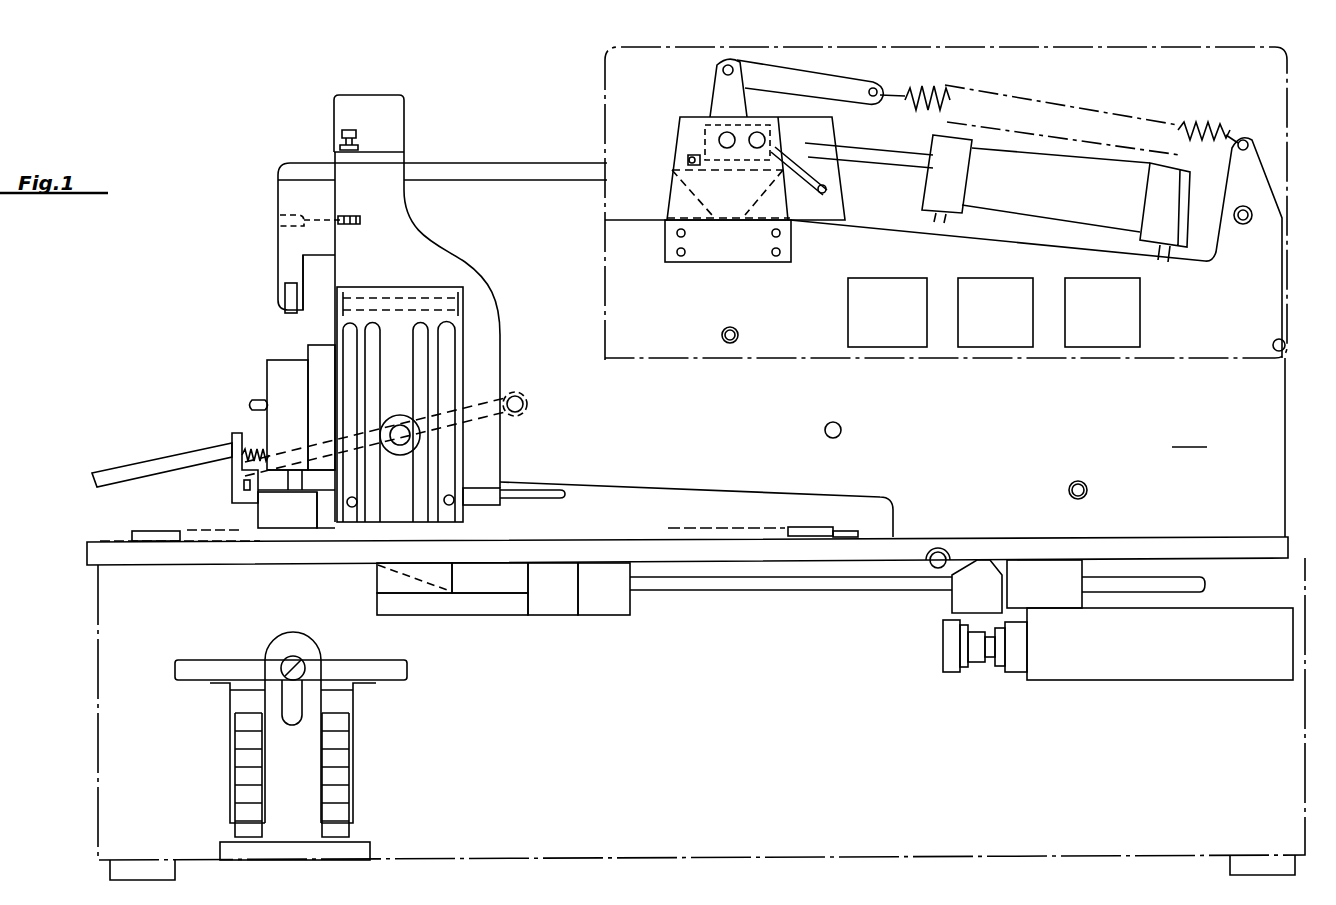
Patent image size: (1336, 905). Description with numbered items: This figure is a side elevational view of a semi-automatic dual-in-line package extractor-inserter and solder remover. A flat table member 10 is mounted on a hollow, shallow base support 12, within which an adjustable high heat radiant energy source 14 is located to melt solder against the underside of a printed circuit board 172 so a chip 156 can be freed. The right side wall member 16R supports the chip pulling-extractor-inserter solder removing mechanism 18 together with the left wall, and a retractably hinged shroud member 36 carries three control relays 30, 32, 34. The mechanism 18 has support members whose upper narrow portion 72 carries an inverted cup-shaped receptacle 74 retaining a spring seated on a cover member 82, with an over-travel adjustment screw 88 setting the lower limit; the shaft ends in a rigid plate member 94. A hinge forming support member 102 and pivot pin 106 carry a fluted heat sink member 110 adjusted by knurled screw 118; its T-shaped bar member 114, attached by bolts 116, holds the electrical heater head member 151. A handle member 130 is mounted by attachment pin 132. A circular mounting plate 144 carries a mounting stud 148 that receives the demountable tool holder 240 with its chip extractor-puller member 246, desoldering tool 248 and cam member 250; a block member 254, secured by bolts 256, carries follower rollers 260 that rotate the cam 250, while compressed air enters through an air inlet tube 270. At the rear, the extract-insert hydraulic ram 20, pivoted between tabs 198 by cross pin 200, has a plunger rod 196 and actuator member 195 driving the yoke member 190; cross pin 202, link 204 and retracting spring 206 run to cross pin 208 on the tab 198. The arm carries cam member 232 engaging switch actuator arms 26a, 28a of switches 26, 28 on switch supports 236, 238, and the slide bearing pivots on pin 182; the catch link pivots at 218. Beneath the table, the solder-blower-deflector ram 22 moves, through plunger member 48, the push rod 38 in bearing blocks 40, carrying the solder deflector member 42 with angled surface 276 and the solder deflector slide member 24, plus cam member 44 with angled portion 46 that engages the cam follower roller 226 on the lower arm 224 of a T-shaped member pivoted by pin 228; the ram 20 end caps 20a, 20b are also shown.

The table member 10 is at (1222, 545).
The base support 12 is at (97, 738).
The high heat radiant energy source 14 is at (350, 772).
The right side wall member 16R is at (1191, 437).
The chip pulling-extractor-inserter solder removing mechanism 18 is at (465, 252).
The extract-insert hydraulic ram 20 is at (1065, 160).
The cylinder rear end cap 20a is at (948, 216).
The cylinder front end cap 20b is at (1170, 245).
The solder-blower-deflector hydraulic ram 22 is at (1095, 670).
The solder deflector slide member 24 is at (487, 620).
The cam actuated switch 26 is at (706, 118).
The switch actuator arm 26a is at (688, 160).
The cam actuated switch 28 is at (838, 150).
The switch actuator arm 28a is at (830, 193).
The control relay 30 is at (887, 348).
The control relay 32 is at (995, 348).
The control relay 34 is at (1100, 348).
The hinged shroud member 36 is at (1136, 42).
The push rod 38 is at (790, 592).
The bearing block 40 is at (625, 610).
The solder deflector member 42 is at (378, 608).
The cam member 44 is at (958, 600).
The angled portion of cam 46 is at (962, 570).
The plunger member 48 is at (955, 672).
The upper narrow portion of support members 72 is at (420, 230).
The inverted cup-shaped receptacle 74 is at (373, 100).
The cover member 82 is at (500, 168).
The over-travel adjustment screw 88 is at (342, 134).
The rigid plate member 94 is at (480, 497).
The hinge forming support member 102 is at (456, 290).
The pivot pin 106 is at (470, 300).
The fluted heat sink member 110 is at (463, 350).
The T-shaped bar member 114 is at (330, 545).
The bolt 116 is at (455, 505).
The knurled adjustment screw 118 is at (421, 437).
The handle member 130 is at (97, 470).
The attachment pin 132 is at (524, 402).
The circular mounting plate 144 is at (325, 348).
The mounting stud 148 is at (250, 405).
The electrical heater head member 151 is at (266, 545).
The chip 156 is at (812, 527).
The printed circuit board 172 is at (605, 535).
The pin 182 is at (728, 344).
The yoke member 190 is at (718, 96).
The actuator member 195 is at (826, 143).
The plunger rod 196 is at (888, 166).
The rear projecting tab 198 is at (1228, 262).
The cross pin 200 is at (1248, 225).
The cross pin 202 is at (733, 60).
The link 204 is at (808, 78).
The retracting spring 206 is at (942, 90).
The cross pin 208 is at (1245, 135).
The pivot 218 is at (841, 435).
The lower dependent arm 224 is at (938, 552).
The cam follower roller 226 is at (925, 572).
The pin 228 is at (1088, 490).
The cam member 232 is at (670, 190).
The switch support 236 is at (703, 265).
The switch support 238 is at (817, 228).
The demountable tool holder 240 is at (254, 386).
The chip extractor-puller member 246 is at (225, 496).
The desoldering tool 248 is at (373, 437).
The cam member 250 is at (278, 366).
The block member 254 is at (290, 200).
The bolt 256 is at (300, 228).
The follower roller 260 is at (287, 296).
The air inlet tube 270 is at (560, 490).
The angled surface of deflector 276 is at (428, 600).